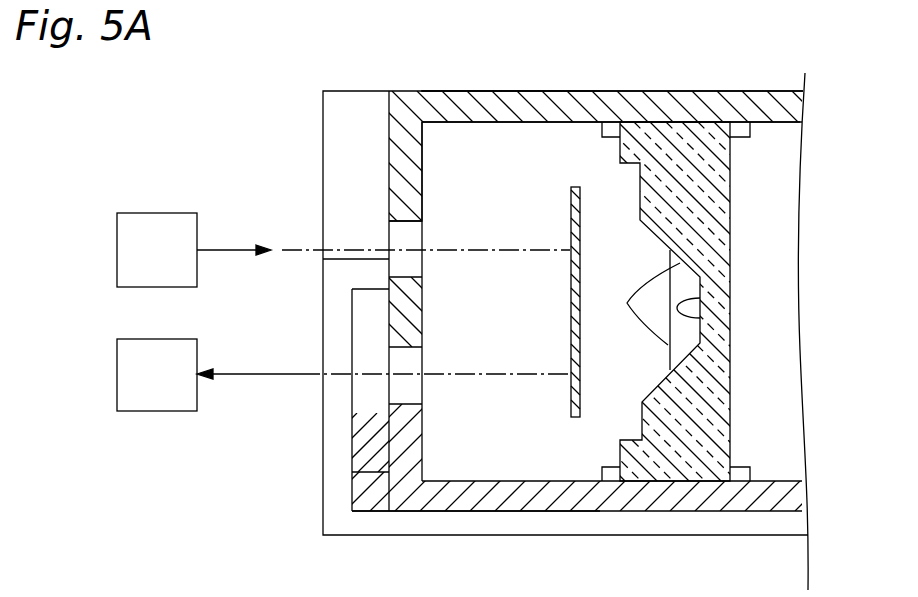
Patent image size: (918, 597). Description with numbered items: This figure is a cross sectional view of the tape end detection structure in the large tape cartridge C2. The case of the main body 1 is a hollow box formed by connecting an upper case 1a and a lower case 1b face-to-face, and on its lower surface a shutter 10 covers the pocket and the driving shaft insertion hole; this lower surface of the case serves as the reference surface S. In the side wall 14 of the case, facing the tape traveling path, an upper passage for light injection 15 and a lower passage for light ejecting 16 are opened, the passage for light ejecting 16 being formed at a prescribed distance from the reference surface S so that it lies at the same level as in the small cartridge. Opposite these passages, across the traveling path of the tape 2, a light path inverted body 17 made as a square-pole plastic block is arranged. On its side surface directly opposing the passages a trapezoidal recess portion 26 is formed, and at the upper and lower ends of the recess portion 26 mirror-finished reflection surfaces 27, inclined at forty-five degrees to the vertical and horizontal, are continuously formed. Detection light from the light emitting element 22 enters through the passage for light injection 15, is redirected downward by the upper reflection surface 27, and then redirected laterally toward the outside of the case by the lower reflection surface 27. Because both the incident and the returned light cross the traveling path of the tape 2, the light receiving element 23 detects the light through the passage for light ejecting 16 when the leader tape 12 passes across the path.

The large tape cartridge C2 is at (500, 68).
The case of the main body 1 is at (664, 91).
The upper case 1a is at (767, 99).
The lower case 1b is at (777, 503).
The shutter 10 is at (518, 527).
The reference surface S is at (415, 513).
The side wall 14 is at (397, 180).
The passage for light injection 15 is at (387, 235).
The passage for light ejecting 16 is at (398, 388).
The light emitting element 22 is at (148, 222).
The light receiving element 23 is at (147, 402).
The tape 2 is at (548, 326).
The leader tape 12 is at (570, 388).
The light path inverted body 17 is at (748, 284).
The trapezoidal recess portion 26 is at (682, 303).
The reflection surface 27 is at (627, 303).